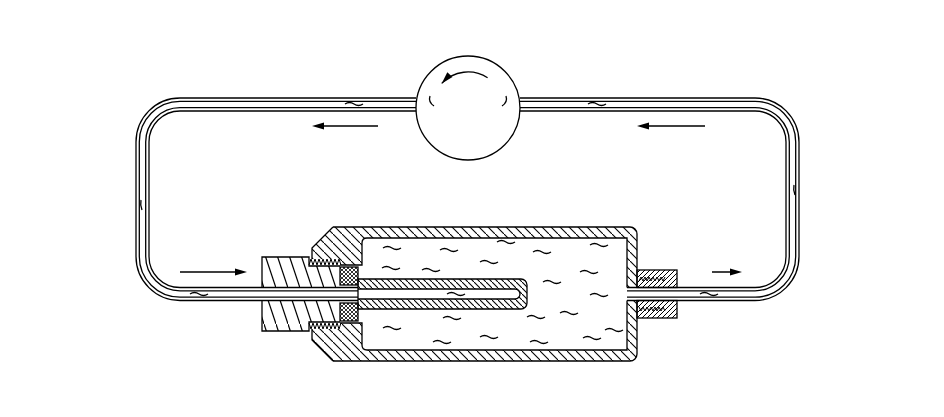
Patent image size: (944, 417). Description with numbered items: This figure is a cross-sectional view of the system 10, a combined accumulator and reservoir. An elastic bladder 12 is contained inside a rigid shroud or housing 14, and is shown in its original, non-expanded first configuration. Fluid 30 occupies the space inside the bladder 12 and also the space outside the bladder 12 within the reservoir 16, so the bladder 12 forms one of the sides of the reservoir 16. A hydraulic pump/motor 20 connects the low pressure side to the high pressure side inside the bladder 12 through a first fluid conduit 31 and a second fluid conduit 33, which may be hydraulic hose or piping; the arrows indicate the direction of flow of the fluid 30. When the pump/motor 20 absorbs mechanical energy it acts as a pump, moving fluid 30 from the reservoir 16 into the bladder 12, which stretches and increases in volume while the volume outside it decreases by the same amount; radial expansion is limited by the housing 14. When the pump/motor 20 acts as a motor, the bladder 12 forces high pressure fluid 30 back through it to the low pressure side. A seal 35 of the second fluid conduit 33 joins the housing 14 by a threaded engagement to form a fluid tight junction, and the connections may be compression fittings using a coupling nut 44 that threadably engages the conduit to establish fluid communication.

The system 10 is at (113, 141).
The elastic bladder 12 is at (425, 311).
The housing 14 is at (343, 352).
The reservoir 16 is at (486, 309).
The pump/motor 20 is at (484, 64).
The fluid 30 is at (493, 191).
The first fluid conduit 31 is at (800, 163).
The second fluid conduit 33 is at (277, 98).
The seal 35 is at (272, 326).
The coupling nut 44 is at (340, 265).